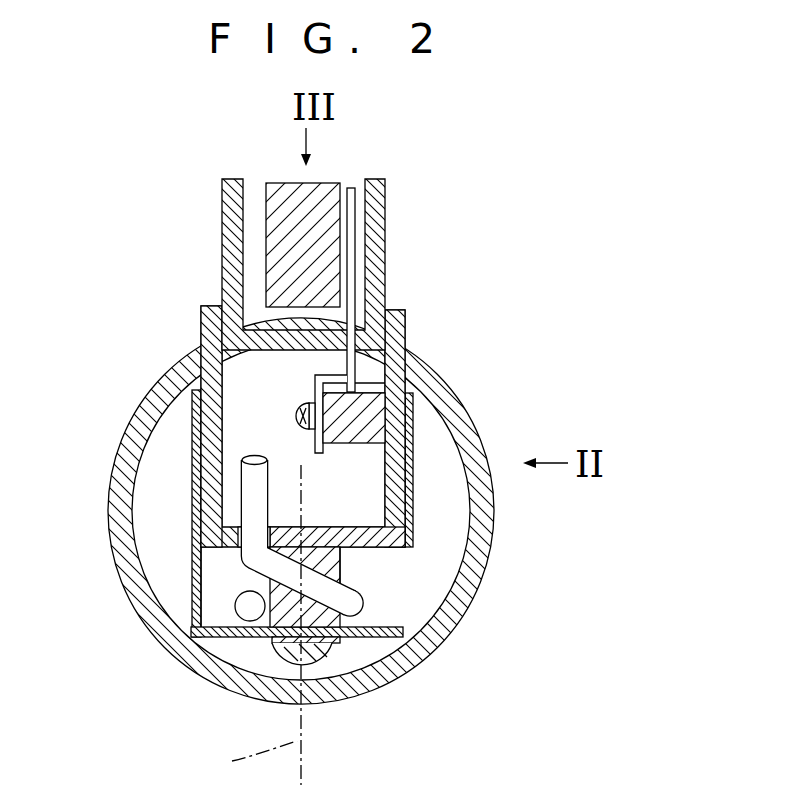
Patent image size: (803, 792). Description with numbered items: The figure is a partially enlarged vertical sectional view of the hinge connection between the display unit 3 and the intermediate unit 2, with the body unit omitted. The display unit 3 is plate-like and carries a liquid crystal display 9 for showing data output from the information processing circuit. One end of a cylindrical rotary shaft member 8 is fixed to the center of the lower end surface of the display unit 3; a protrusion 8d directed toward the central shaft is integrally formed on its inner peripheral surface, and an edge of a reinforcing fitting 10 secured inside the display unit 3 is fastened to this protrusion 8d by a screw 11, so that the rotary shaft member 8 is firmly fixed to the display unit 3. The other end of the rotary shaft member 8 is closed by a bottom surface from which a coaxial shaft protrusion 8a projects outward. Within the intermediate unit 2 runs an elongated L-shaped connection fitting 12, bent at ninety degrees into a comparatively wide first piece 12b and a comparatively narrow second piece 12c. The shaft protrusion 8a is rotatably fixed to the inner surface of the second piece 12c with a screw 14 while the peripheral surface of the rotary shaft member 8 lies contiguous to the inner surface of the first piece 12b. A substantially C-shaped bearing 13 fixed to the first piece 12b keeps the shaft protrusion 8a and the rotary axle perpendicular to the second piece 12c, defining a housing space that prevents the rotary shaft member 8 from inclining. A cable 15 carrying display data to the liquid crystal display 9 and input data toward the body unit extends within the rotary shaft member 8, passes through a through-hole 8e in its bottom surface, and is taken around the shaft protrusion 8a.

The intermediate unit 2 is at (307, 482).
The display unit 3 is at (386, 215).
The rotary shaft member 8 is at (307, 457).
The shaft protrusion 8a is at (345, 572).
The protrusion 8d is at (355, 445).
The through-hole 8e is at (205, 512).
The liquid crystal display 9 is at (266, 245).
The reinforcing fitting 10 is at (357, 262).
The screw 11 is at (300, 413).
The connection fitting 12 is at (265, 527).
The first piece 12b is at (190, 587).
The second piece 12c is at (225, 640).
The bearing 13 is at (413, 437).
The screw 14 is at (332, 655).
The cable 15 is at (362, 608).